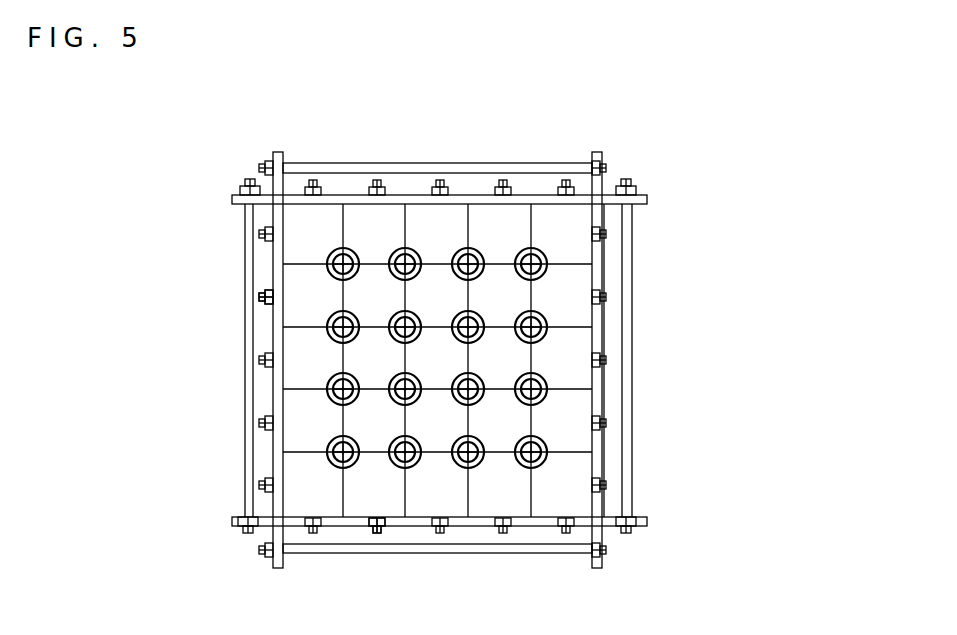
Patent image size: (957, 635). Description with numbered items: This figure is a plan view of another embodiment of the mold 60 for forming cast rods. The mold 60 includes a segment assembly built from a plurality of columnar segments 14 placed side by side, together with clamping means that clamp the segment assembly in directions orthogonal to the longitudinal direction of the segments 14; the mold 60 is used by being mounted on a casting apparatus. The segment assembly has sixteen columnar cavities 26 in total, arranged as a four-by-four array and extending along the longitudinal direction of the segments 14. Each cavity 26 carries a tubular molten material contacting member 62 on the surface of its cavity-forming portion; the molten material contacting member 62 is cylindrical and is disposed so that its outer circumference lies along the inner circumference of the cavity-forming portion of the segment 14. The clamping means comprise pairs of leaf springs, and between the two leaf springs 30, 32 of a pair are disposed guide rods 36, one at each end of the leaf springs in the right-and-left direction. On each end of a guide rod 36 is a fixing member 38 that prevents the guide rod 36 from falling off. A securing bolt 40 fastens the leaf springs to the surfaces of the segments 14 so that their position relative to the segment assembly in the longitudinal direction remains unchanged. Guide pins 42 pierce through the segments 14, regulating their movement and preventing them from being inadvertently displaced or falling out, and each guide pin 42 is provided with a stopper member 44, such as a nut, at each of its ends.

The mold for forming cast rods 60 is at (650, 128).
The columnar segment 14 is at (366, 222).
The columnar cavity 26 is at (462, 250).
The molten material contacting member 62 is at (538, 250).
The fixing member 38 is at (238, 188).
The leaf spring 32 is at (648, 199).
The leaf spring 30 is at (647, 522).
The guide rod 36 is at (248, 237).
The guide pin 42 is at (265, 297).
The stopper member 44 is at (268, 306).
The securing bolt 40 is at (262, 362).